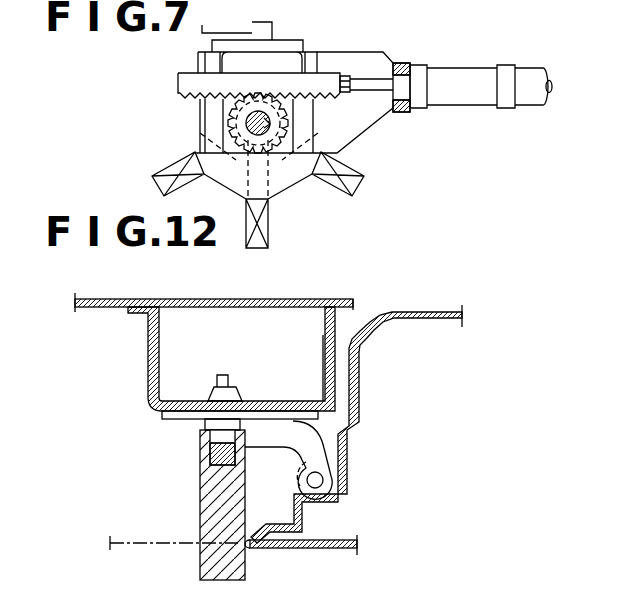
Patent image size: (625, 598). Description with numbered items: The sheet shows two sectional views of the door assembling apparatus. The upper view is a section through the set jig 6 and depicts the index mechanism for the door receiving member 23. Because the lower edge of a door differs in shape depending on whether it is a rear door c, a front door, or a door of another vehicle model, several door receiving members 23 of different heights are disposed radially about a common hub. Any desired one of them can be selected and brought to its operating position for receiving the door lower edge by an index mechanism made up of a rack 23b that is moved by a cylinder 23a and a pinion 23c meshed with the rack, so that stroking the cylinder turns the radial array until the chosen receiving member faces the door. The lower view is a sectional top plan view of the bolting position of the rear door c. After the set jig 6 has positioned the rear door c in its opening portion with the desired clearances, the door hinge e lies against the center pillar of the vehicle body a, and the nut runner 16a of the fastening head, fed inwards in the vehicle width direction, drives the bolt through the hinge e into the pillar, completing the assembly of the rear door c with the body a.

In FIG. 7, the door receiving member 23 is at (168, 170).
In FIG. 7, the cylinder 23a is at (467, 96).
In FIG. 7, the rack 23b is at (278, 80).
In FIG. 7, the pinion 23c is at (280, 106).
In FIG. 7, the set jig 6 is at (512, 7).
In FIG. 12, the vehicle body a is at (98, 308).
In FIG. 12, the nut runner 16a is at (205, 483).
In FIG. 12, the door hinge e is at (313, 466).
In FIG. 12, the rear door c is at (132, 540).